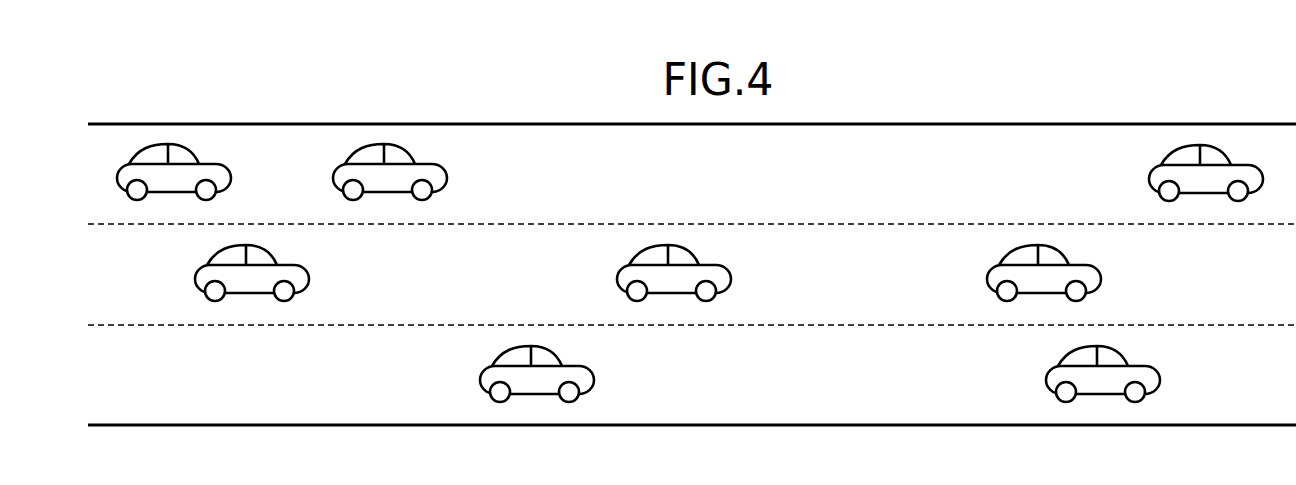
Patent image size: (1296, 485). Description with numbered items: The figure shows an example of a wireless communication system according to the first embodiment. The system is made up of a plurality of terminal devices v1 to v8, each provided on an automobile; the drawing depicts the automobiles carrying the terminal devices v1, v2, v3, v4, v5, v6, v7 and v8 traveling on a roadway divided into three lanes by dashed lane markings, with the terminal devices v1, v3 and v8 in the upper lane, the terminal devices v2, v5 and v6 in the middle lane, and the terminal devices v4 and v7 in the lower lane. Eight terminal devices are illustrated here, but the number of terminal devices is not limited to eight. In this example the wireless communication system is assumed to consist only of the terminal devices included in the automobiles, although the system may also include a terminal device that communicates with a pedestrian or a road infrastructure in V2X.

The terminal device v1 is at (174, 172).
The terminal device v2 is at (252, 273).
The terminal device v3 is at (390, 172).
The terminal device v4 is at (537, 374).
The terminal device v5 is at (674, 273).
The terminal device v6 is at (1044, 273).
The terminal device v7 is at (1103, 374).
The terminal device v8 is at (1206, 173).